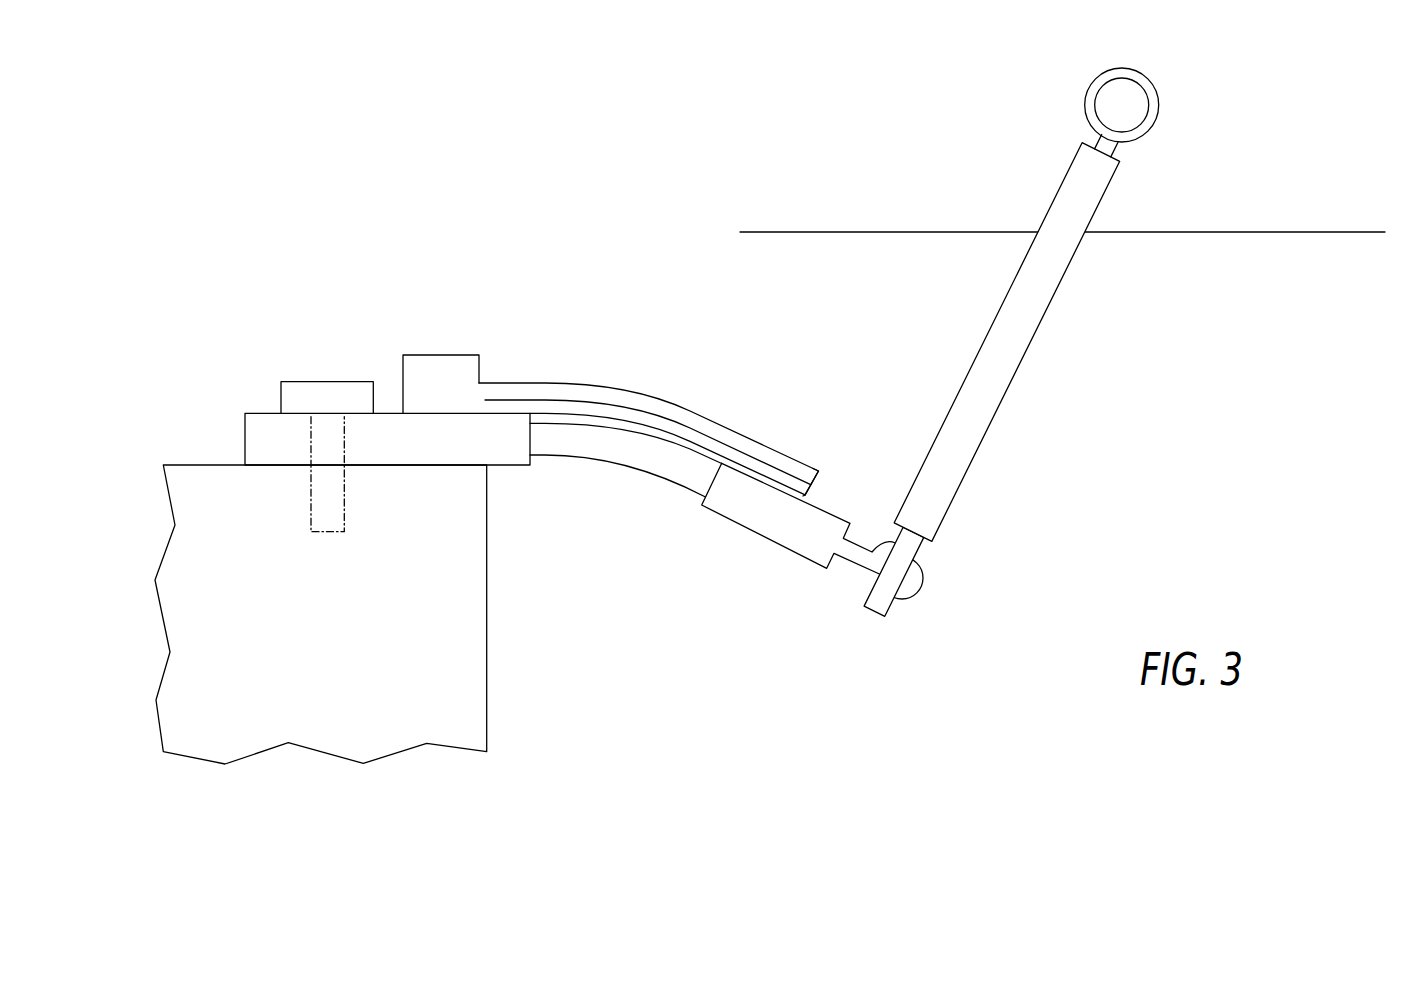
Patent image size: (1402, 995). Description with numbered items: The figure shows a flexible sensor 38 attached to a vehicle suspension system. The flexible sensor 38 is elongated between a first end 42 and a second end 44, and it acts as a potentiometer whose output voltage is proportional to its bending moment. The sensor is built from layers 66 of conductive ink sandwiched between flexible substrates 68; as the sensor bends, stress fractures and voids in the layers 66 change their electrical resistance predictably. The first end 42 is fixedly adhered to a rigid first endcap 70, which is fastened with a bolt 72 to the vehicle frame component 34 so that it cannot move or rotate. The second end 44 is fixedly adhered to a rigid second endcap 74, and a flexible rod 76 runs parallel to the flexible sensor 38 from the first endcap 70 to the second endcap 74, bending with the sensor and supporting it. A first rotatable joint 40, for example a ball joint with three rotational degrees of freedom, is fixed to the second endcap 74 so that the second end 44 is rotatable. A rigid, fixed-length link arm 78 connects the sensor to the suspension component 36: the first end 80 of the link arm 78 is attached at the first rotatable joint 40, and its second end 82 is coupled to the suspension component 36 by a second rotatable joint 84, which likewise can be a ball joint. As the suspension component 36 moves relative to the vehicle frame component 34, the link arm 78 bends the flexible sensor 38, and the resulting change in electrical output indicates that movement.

The vehicle frame component 34 is at (487, 627).
The suspension component 36 is at (1219, 233).
The flexible sensor 38 is at (649, 429).
The first rotatable joint 40 is at (906, 594).
The first end 42 is at (500, 382).
The second end 44 is at (815, 467).
The layers of conductive ink 66 is at (551, 398).
The flexible substrates 68 is at (598, 421).
The first endcap 70 is at (505, 466).
The bolt 72 is at (313, 381).
The second endcap 74 is at (758, 535).
The flexible rod 76 is at (642, 474).
The link arm 78 is at (1044, 320).
The first end 80 is at (935, 538).
The second end 82 is at (1118, 166).
The second rotatable joint 84 is at (1140, 72).